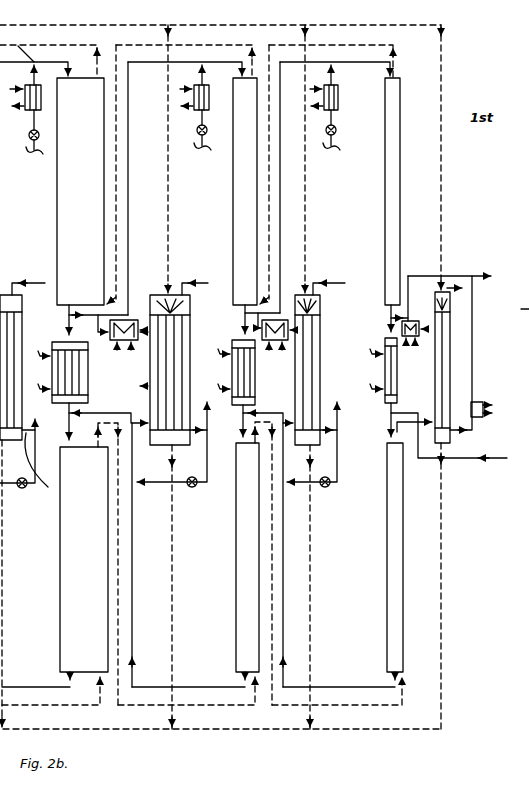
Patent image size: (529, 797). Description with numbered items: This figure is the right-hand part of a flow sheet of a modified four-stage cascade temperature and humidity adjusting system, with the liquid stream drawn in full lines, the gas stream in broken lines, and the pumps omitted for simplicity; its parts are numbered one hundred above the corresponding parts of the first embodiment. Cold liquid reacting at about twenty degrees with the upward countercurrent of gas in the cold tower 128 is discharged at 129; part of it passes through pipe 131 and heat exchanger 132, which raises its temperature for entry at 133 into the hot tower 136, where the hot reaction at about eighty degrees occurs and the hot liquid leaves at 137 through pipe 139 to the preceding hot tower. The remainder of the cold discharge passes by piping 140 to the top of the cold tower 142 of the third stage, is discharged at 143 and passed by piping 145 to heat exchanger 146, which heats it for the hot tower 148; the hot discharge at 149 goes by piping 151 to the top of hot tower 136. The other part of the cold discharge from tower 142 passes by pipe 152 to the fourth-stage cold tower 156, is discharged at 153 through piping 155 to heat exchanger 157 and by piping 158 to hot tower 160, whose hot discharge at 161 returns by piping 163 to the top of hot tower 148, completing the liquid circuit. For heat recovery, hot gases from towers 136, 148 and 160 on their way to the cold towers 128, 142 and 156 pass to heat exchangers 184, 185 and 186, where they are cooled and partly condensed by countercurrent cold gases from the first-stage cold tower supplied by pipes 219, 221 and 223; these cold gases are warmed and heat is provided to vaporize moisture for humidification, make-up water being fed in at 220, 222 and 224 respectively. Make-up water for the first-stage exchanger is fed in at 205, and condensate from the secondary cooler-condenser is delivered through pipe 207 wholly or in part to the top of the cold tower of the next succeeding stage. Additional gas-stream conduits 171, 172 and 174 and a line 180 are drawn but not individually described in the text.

The cold tower 128 is at (58, 181).
The cold liquid discharge 129 is at (67, 316).
The pipe 131 is at (66, 322).
The heat exchanger 132 is at (85, 380).
The hot tower entry 133 is at (64, 437).
The hot tower 136 is at (60, 570).
The hot liquid discharge 137 is at (67, 674).
The pipe 139 is at (2, 641).
The piping 140 is at (129, 120).
The cold tower 142 is at (235, 181).
The cold tower discharge 143 is at (243, 310).
The piping 145 is at (242, 327).
The heat exchanger 146 is at (231, 377).
The hot tower 148 is at (236, 571).
The hot tower discharge 149 is at (243, 675).
The piping 151 is at (135, 652).
The pipe 152 is at (297, 109).
The cold tower discharge 153 is at (390, 306).
The piping 155 is at (390, 323).
The cold tower 156 is at (385, 193).
The heat exchanger 157 is at (384, 373).
The piping 158 is at (390, 415).
The hot tower 160 is at (387, 560).
The hot tower discharge 161 is at (393, 675).
The piping 163 is at (285, 657).
The liquid transfer line 171 is at (157, 528).
The liquid transfer line 172 is at (283, 536).
The feed line to separator 174 is at (390, 438).
The recycle line 180 is at (2, 623).
The heat exchanger 184 is at (148, 393).
The heat exchanger 185 is at (294, 389).
The heat exchanger 186 is at (434, 388).
The make-up water feed 205 is at (44, 285).
The condensate pipe 207 is at (38, 146).
The pipe 219 is at (206, 228).
The make-up water feed 220 is at (212, 272).
The pipe 221 is at (307, 244).
The make-up water feed 222 is at (352, 272).
The pipe 223 is at (488, 233).
The make-up water feed 224 is at (452, 277).